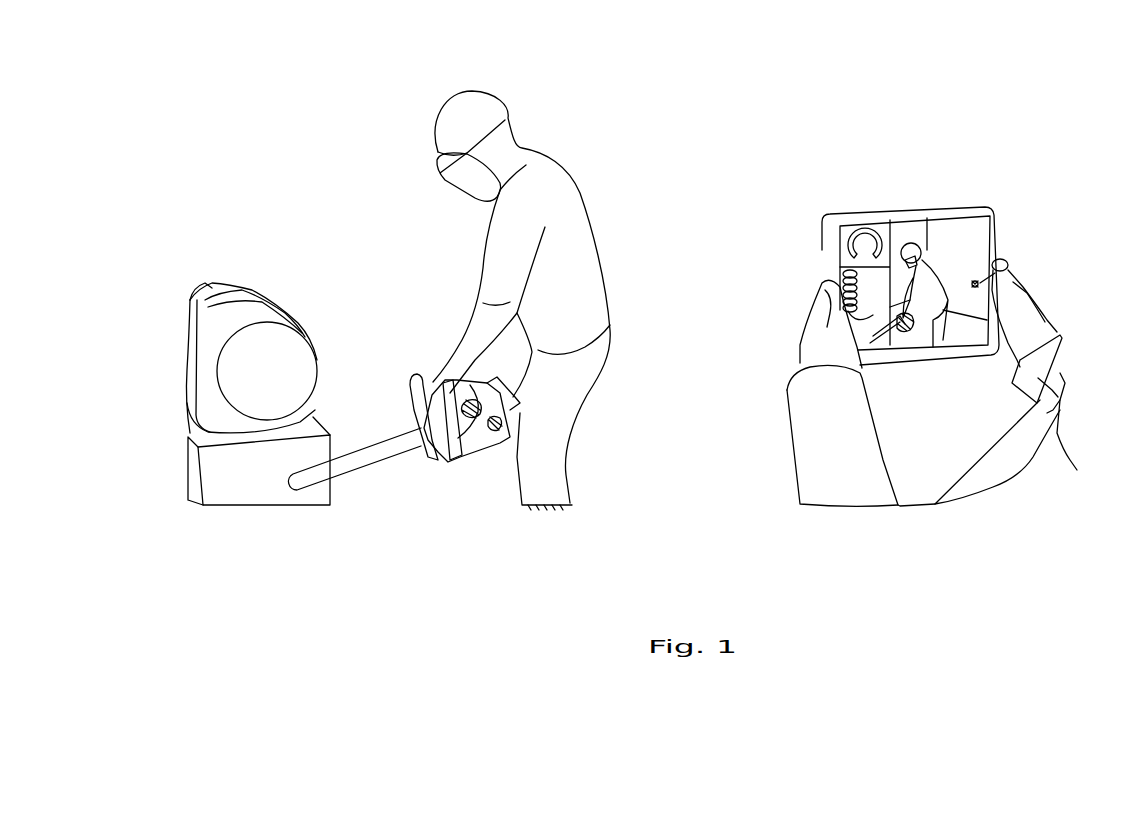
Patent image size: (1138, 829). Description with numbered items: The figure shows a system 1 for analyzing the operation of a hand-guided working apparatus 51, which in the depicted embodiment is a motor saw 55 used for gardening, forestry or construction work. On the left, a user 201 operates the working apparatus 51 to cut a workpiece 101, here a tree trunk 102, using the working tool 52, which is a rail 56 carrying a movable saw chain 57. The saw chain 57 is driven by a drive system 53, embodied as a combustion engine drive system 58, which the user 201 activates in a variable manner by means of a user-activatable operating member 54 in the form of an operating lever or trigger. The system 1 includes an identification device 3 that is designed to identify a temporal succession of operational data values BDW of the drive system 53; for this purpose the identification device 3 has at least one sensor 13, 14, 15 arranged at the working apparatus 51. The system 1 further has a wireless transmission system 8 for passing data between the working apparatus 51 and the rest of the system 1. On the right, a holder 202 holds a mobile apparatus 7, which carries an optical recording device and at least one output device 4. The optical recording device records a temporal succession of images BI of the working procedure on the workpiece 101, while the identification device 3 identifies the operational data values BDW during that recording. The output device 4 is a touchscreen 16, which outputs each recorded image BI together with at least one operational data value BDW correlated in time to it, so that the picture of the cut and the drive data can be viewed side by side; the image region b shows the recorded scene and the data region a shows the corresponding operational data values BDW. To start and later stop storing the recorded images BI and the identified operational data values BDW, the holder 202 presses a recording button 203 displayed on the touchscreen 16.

The system 1 is at (297, 140).
The identification device 3 is at (474, 442).
The output device 4 is at (968, 235).
The mobile apparatus 7 is at (968, 235).
The wireless transmission system 8 is at (474, 442).
The sensor 13 is at (496, 442).
The sensor 14 is at (496, 442).
The sensor 15 is at (496, 442).
The touchscreen 16 is at (961, 243).
The hand-guided working apparatus 51 is at (496, 442).
The working tool 52 is at (351, 523).
The drive system 53 is at (496, 442).
The user-activatable operating member 54 is at (513, 397).
The motor saw 55 is at (417, 385).
The rail 56 is at (351, 489).
The saw chain 57 is at (351, 489).
The combustion engine drive system 58 is at (452, 376).
The workpiece 101 is at (247, 367).
The tree trunk 102 is at (225, 323).
The user 201 is at (578, 242).
The holder 202 is at (953, 382).
The recording button 203 is at (1008, 268).
The operational data values BDW is at (845, 310).
The images BI is at (977, 255).
The data display area a is at (845, 215).
The image capture direction b is at (498, 378).